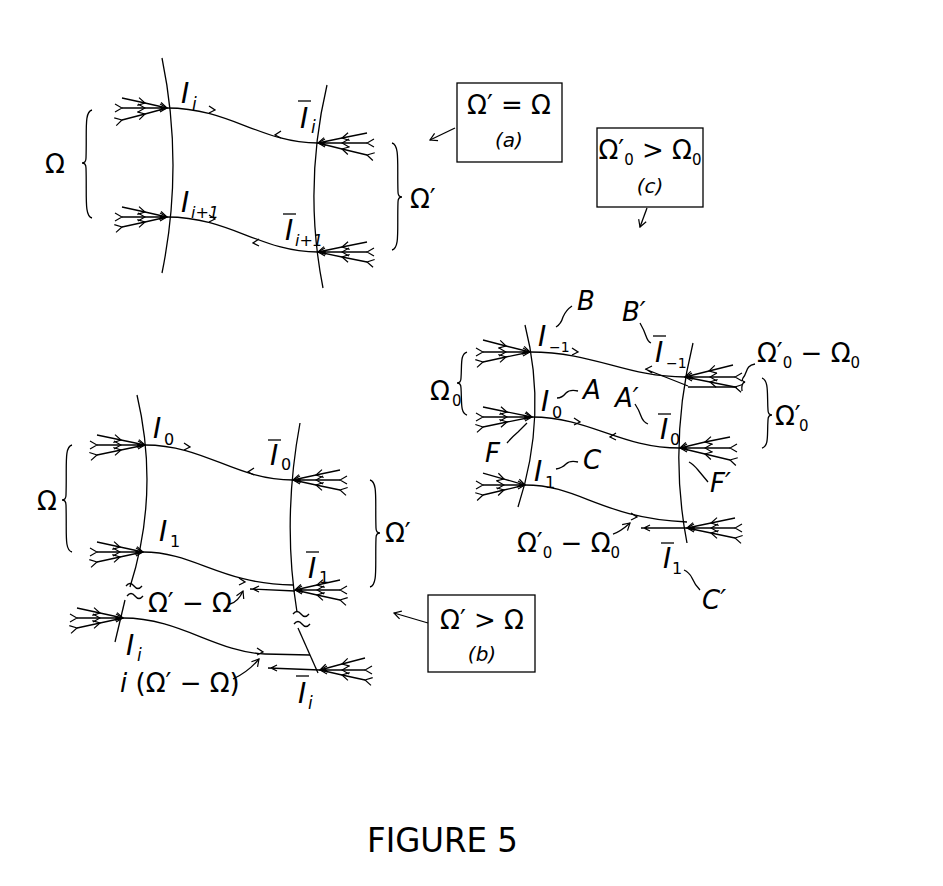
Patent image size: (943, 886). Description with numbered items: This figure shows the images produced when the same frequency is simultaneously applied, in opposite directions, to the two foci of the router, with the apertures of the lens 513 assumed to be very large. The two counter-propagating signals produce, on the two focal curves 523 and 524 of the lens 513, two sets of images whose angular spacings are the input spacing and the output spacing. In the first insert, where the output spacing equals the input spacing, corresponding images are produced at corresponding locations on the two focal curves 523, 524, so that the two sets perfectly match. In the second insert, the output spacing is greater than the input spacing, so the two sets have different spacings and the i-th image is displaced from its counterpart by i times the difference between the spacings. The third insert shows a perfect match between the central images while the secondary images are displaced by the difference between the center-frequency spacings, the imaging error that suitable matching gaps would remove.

The lens 513 is at (325, 68).
The focal curve 523 is at (164, 73).
The focal curve 524 is at (327, 91).